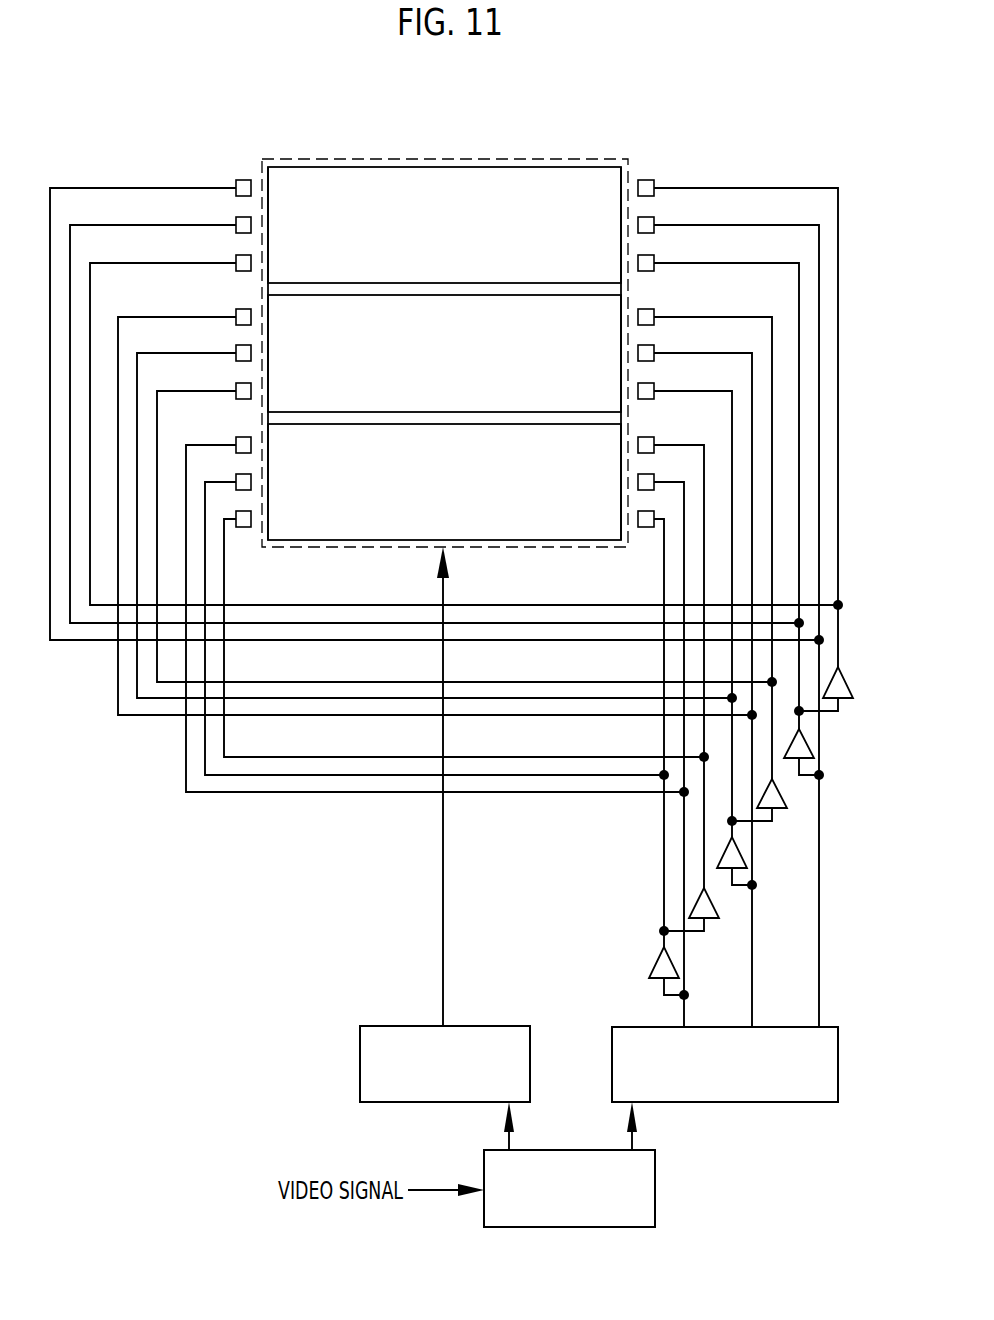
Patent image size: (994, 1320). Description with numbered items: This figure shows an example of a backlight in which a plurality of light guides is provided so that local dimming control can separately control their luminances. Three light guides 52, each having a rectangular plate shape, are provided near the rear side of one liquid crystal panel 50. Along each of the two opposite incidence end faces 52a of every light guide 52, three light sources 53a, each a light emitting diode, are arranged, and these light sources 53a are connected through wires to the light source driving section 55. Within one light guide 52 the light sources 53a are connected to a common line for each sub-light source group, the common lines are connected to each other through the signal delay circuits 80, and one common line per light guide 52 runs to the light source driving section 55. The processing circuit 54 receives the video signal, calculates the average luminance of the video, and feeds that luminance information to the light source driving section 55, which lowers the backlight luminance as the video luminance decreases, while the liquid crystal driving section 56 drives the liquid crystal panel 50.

The liquid crystal panel 50 is at (370, 158).
The light guide 52 is at (443, 182).
The incidence end face 52a is at (268, 284).
The light source 53a is at (252, 187).
The signal delay circuit 80 is at (847, 699).
The liquid crystal driving section 56 is at (531, 1062).
The light source driving section 55 is at (782, 1103).
The processing circuit 54 is at (656, 1190).